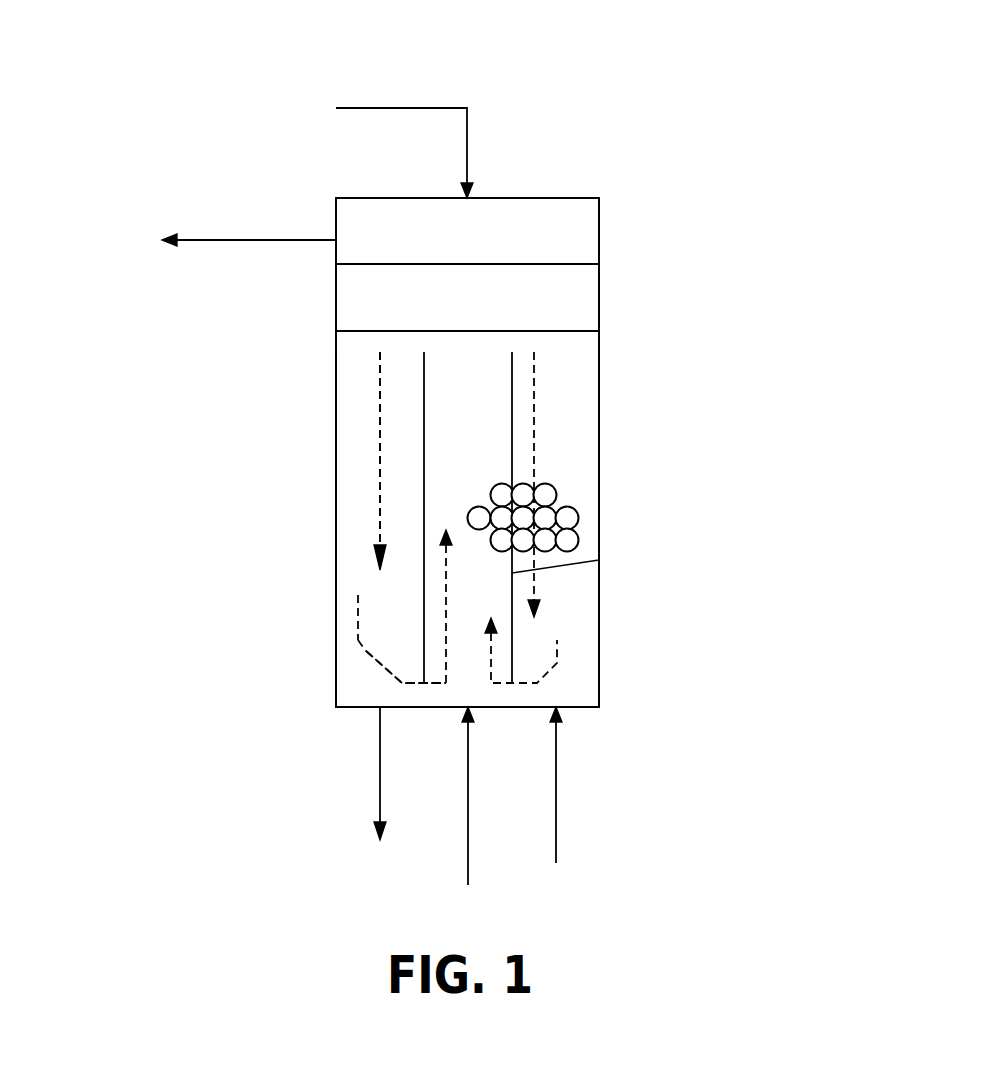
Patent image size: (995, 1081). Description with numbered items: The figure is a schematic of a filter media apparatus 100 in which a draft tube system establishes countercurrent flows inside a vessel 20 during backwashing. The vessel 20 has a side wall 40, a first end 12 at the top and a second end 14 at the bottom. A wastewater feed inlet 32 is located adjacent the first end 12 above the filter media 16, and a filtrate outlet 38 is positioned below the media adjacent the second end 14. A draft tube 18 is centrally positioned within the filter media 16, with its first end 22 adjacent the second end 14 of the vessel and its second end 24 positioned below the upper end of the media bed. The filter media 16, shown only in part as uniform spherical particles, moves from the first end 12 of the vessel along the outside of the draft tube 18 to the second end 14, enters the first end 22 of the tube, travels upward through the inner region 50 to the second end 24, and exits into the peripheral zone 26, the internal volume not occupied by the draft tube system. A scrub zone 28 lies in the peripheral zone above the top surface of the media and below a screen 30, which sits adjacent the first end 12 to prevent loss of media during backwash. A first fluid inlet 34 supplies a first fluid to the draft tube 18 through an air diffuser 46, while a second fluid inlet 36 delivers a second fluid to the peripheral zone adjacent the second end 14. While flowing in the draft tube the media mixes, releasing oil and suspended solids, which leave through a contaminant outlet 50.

The filter media apparatus 100 is at (656, 197).
The first end of the vessel 12 is at (336, 220).
The second end of the vessel 14 is at (336, 683).
The filter media 16 is at (579, 518).
The draft tube 18 is at (424, 530).
The vessel 20 is at (614, 462).
The first end of the draft tube 22 is at (424, 640).
The second end of the draft tube 24 is at (424, 373).
The peripheral zone 26 is at (357, 484).
The scrub zone 28 is at (599, 297).
The screen 30 is at (336, 265).
The wastewater feed inlet 32 is at (402, 108).
The first fluid inlet 34 is at (468, 822).
The second fluid inlet 36 is at (556, 852).
The filtrate outlet 38 is at (380, 795).
The side wall 40 is at (599, 385).
The air diffuser 46 is at (512, 573).
The inner region 50 is at (205, 242).